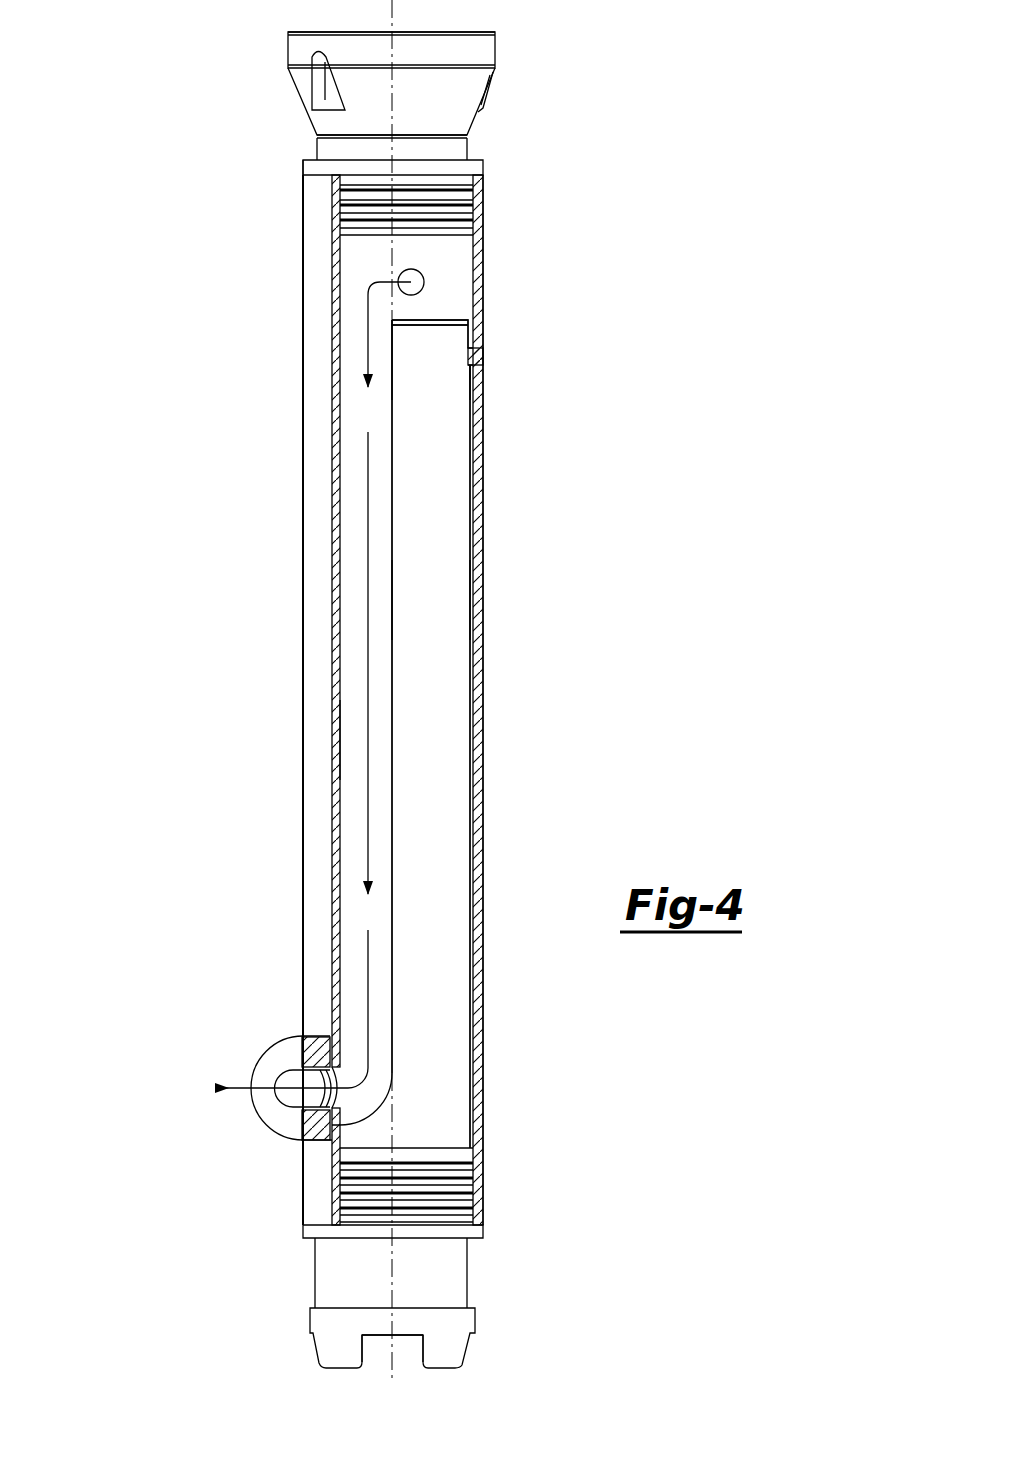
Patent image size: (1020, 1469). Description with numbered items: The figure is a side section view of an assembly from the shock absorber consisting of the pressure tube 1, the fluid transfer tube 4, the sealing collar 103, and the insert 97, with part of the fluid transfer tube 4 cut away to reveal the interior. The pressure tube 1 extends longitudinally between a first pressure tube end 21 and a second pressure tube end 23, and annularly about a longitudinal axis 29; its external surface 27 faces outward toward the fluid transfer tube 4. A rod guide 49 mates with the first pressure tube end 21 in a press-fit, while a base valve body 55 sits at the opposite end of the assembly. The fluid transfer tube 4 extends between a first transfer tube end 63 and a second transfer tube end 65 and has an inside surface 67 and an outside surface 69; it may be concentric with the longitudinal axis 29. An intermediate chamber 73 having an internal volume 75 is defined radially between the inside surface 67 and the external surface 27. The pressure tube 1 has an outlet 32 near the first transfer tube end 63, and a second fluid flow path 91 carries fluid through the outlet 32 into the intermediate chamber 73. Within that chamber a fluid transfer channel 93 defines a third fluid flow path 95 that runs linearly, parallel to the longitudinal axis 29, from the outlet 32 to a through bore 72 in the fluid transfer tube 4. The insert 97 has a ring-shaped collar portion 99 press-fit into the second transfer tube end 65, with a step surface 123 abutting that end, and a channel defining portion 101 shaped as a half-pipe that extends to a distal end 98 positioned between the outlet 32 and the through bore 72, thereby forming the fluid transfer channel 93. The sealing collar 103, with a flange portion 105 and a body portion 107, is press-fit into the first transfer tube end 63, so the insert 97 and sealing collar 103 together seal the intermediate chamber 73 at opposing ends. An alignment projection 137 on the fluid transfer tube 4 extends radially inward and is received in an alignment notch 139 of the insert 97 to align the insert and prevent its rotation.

The pressure tube 1 is at (315, 135).
The fluid transfer tube 4 is at (303, 690).
The first pressure tube end 21 is at (438, 128).
The second pressure tube end 23 is at (312, 1312).
The external surface 27 is at (440, 1290).
The longitudinal axis 29 is at (373, 288).
The outlet 32 is at (422, 278).
The rod guide 49 is at (462, 58).
The base valve body 55 is at (450, 1340).
The first transfer tube end 63 is at (308, 207).
The second transfer tube end 65 is at (303, 1217).
The inside surface 67 is at (357, 743).
The outside surface 69 is at (325, 622).
The through bore 72 is at (310, 1082).
The intermediate chamber 73 is at (452, 312).
The internal volume 75 is at (378, 470).
The second fluid flow path 91 is at (368, 368).
The fluid transfer channel 93 is at (355, 960).
The third fluid flow path 95 is at (368, 530).
The insert 97 is at (463, 604).
The distal end 98 is at (428, 318).
The collar portion 99 is at (463, 1235).
The channel defining portion 101 is at (460, 512).
The sealing collar 103 is at (510, 175).
The flange portion 105 is at (472, 163).
The body portion 107 is at (428, 213).
The step surface 123 is at (462, 1221).
The alignment projection 137 is at (478, 358).
The alignment notch 139 is at (472, 370).